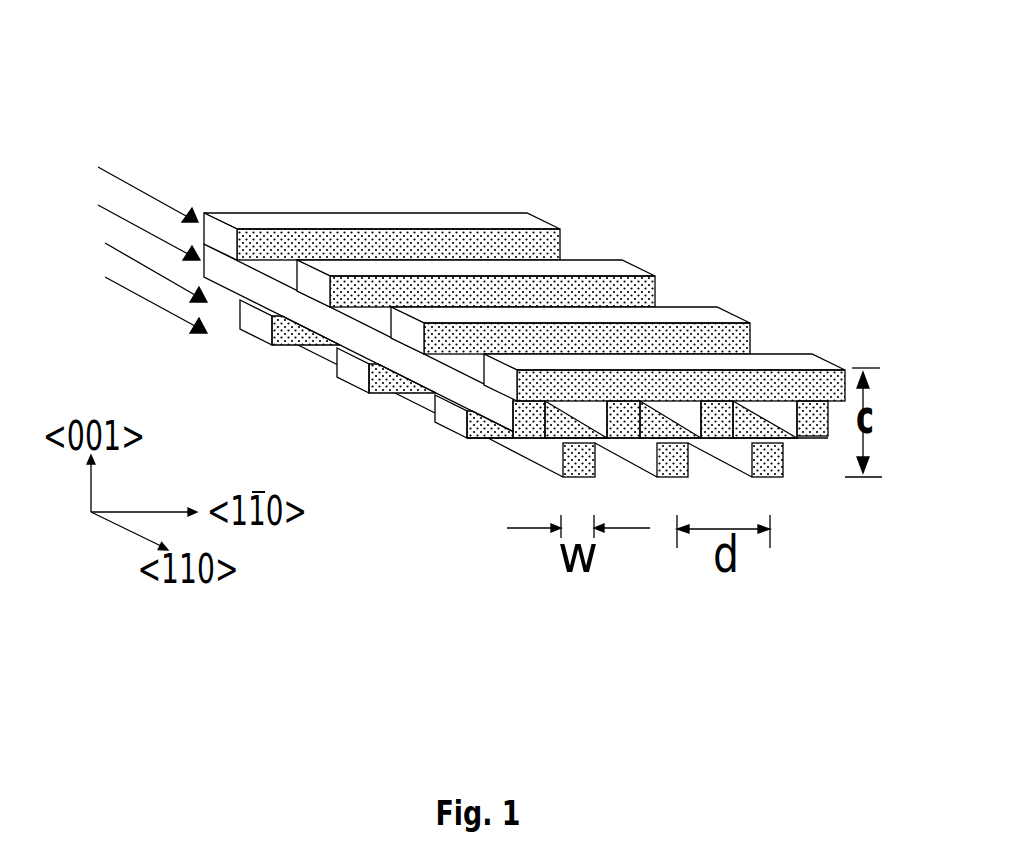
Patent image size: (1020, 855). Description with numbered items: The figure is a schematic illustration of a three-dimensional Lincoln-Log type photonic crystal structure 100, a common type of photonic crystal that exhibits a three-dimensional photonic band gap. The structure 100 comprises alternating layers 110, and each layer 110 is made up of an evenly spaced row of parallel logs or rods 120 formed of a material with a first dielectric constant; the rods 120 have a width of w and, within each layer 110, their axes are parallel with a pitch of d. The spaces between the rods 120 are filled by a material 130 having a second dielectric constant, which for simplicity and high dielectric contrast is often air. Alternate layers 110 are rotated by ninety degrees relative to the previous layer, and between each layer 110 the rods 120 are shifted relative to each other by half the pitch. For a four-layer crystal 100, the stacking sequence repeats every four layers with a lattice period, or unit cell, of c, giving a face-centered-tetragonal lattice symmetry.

The photonic crystal structure 100 is at (524, 256).
The layer 110 is at (117, 250).
The rod 120 is at (543, 221).
The material 130 is at (630, 245).